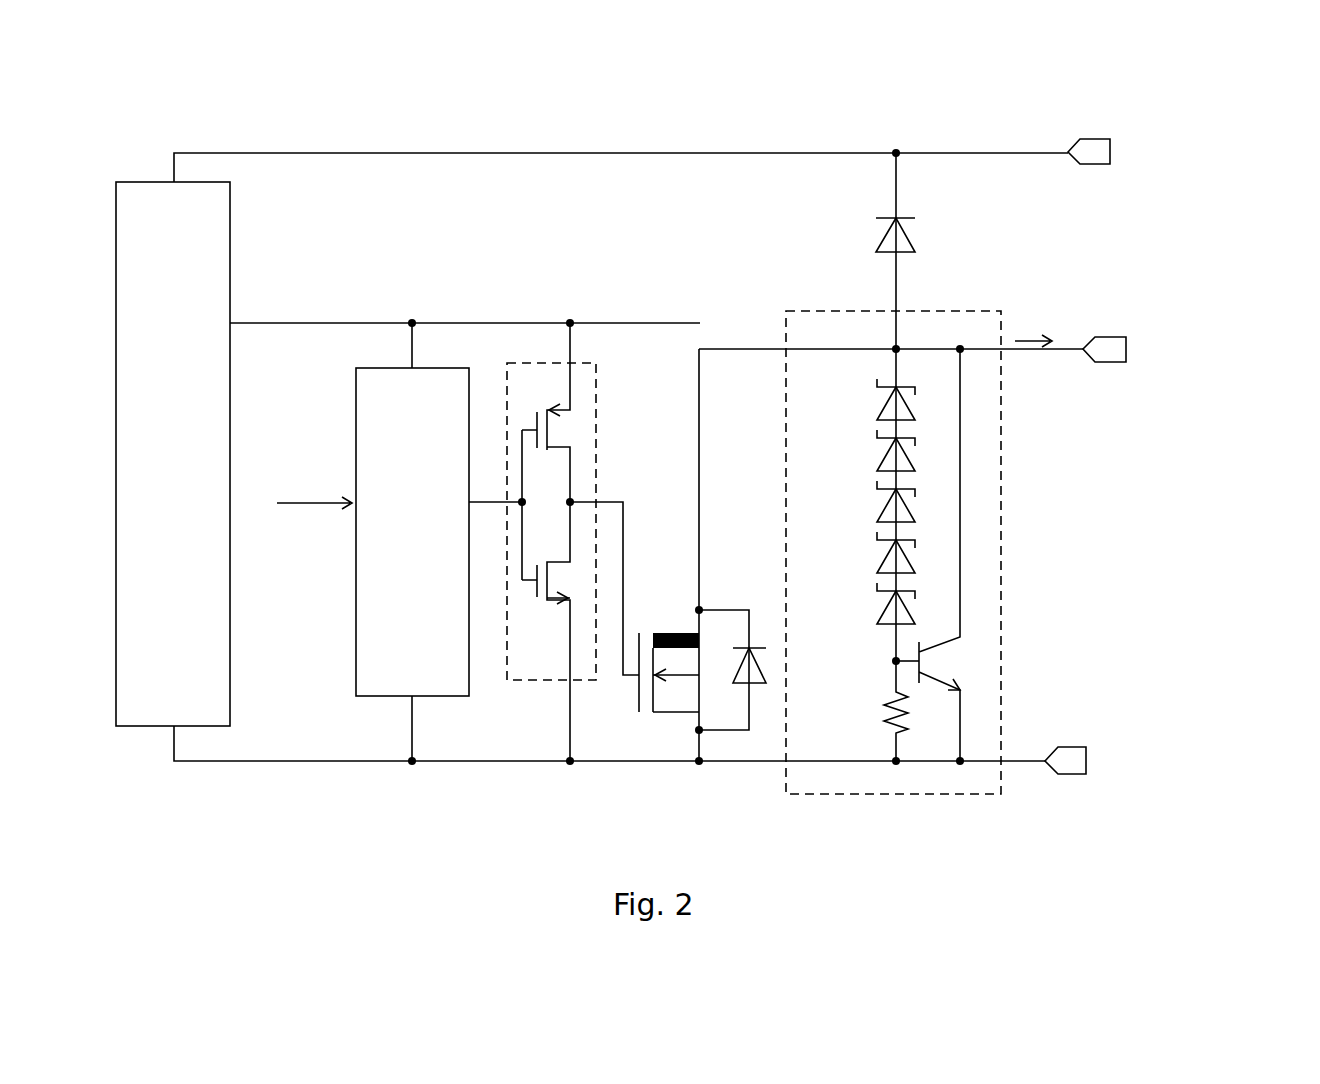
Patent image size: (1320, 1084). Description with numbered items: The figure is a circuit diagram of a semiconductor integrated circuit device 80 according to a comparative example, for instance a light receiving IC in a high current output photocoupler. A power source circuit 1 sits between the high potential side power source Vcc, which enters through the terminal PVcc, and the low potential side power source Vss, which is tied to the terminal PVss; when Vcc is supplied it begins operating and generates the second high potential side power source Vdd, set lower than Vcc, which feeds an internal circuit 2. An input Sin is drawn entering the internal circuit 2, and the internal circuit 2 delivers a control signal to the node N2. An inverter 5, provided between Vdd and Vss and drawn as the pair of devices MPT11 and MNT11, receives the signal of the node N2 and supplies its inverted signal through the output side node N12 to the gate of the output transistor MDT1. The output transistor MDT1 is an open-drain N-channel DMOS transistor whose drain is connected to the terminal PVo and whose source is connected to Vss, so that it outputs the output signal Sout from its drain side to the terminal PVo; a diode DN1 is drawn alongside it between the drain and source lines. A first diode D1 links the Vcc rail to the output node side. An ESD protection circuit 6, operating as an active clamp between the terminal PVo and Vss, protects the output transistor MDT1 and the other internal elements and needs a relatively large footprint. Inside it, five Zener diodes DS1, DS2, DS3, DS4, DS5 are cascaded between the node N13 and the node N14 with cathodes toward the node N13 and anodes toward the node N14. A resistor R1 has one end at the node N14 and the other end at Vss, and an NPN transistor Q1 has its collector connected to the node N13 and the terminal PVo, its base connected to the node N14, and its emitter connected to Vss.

The power source circuit 1 is at (228, 252).
The internal circuit 2 is at (357, 630).
The inverter 5 is at (585, 388).
The ESD protection circuit 6 is at (990, 490).
The semiconductor integrated circuit device 80 is at (1198, 258).
The diode D1 is at (923, 237).
The diode DS1 is at (880, 402).
The diode DS2 is at (880, 453).
The diode DS3 is at (880, 504).
The diode DS4 is at (880, 555).
The diode DS5 is at (880, 606).
The NPN transistor Q1 is at (955, 657).
The resistor R1 is at (875, 705).
The output transistor MDT1 is at (723, 630).
The body diode DN1 is at (760, 683).
The PMOS transistor MPT11 is at (572, 427).
The NMOS transistor MNT11 is at (570, 577).
The node N2 is at (497, 505).
The output side node N12 is at (609, 575).
The node N13 is at (891, 337).
The node N14 is at (881, 661).
The high potential side power source Vcc is at (621, 146).
The high potential side power source Vdd is at (465, 306).
The low potential side power source Vss is at (609, 743).
The input signal Sin is at (314, 488).
The output signal Sout is at (1037, 331).
The terminal PVcc is at (1096, 137).
The terminal PVo is at (1106, 335).
The terminal PVss is at (1072, 746).